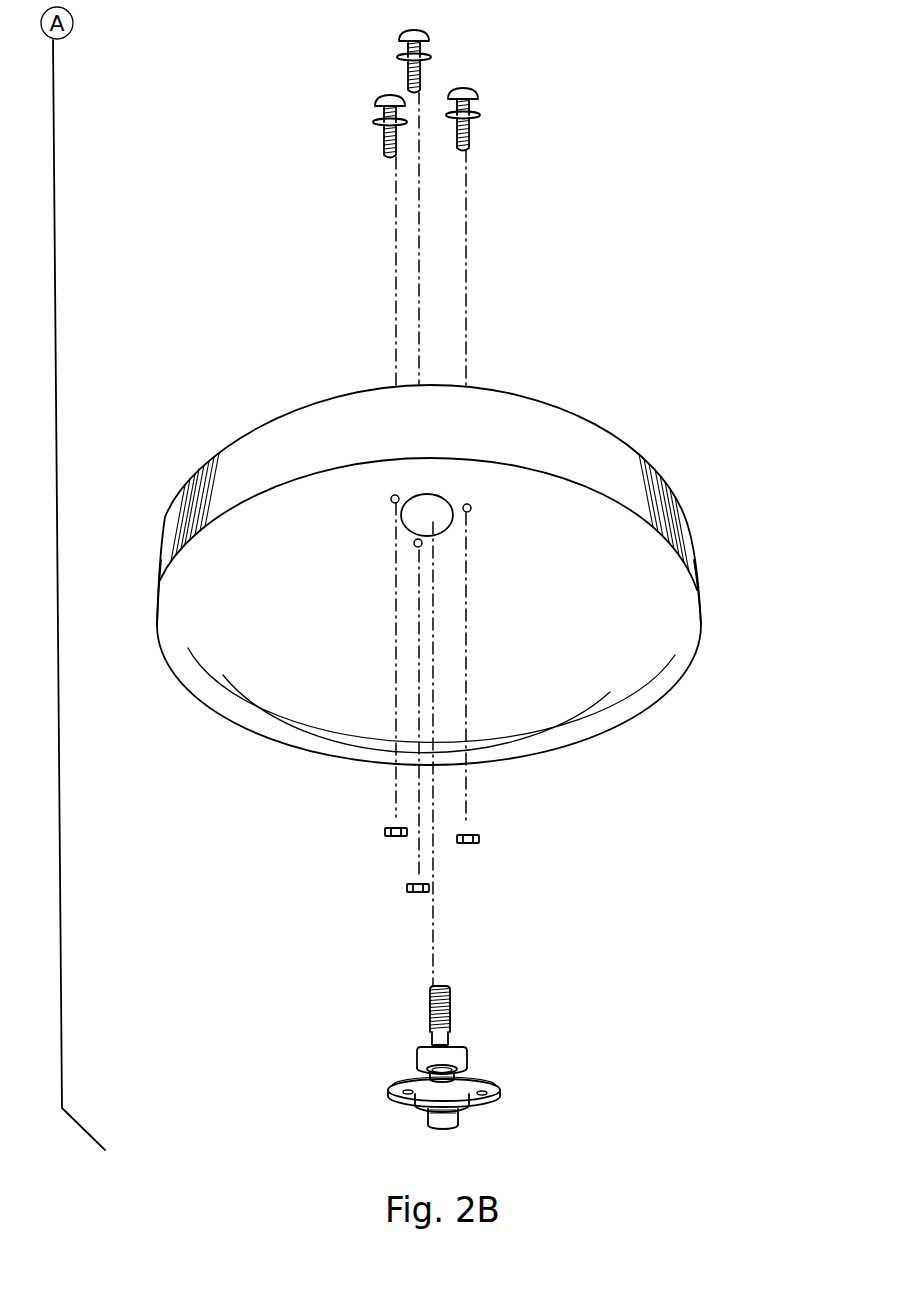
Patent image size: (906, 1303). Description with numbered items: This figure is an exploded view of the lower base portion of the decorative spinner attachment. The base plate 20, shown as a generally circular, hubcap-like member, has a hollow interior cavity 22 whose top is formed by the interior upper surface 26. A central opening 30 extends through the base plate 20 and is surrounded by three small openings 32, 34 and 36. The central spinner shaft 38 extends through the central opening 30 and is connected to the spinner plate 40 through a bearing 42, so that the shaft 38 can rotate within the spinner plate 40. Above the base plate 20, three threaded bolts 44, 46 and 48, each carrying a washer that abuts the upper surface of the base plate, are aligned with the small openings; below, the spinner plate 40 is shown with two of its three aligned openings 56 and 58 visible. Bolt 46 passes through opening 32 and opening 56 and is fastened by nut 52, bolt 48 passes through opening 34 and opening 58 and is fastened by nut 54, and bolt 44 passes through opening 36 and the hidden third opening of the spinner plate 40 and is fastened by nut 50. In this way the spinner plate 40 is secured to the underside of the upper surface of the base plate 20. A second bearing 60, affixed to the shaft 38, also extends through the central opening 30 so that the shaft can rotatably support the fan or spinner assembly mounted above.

The base plate 20 is at (238, 457).
The hollow interior cavity 22 is at (188, 580).
The interior upper surface 26 is at (668, 585).
The central opening 30 is at (427, 505).
The opening 32 is at (397, 494).
The opening 34 is at (474, 506).
The opening 36 is at (415, 541).
The central spinner shaft 38 is at (450, 1010).
The spinner plate 40 is at (490, 1081).
The bearing 42 is at (462, 1098).
The threaded bolt 44 is at (430, 46).
The threaded bolt 46 is at (375, 112).
The threaded bolt 48 is at (479, 104).
The nut 50 is at (405, 888).
The nut 52 is at (383, 833).
The nut 54 is at (480, 838).
The opening 56 is at (390, 1088).
The opening 58 is at (484, 1098).
The second bearing 60 is at (462, 1055).